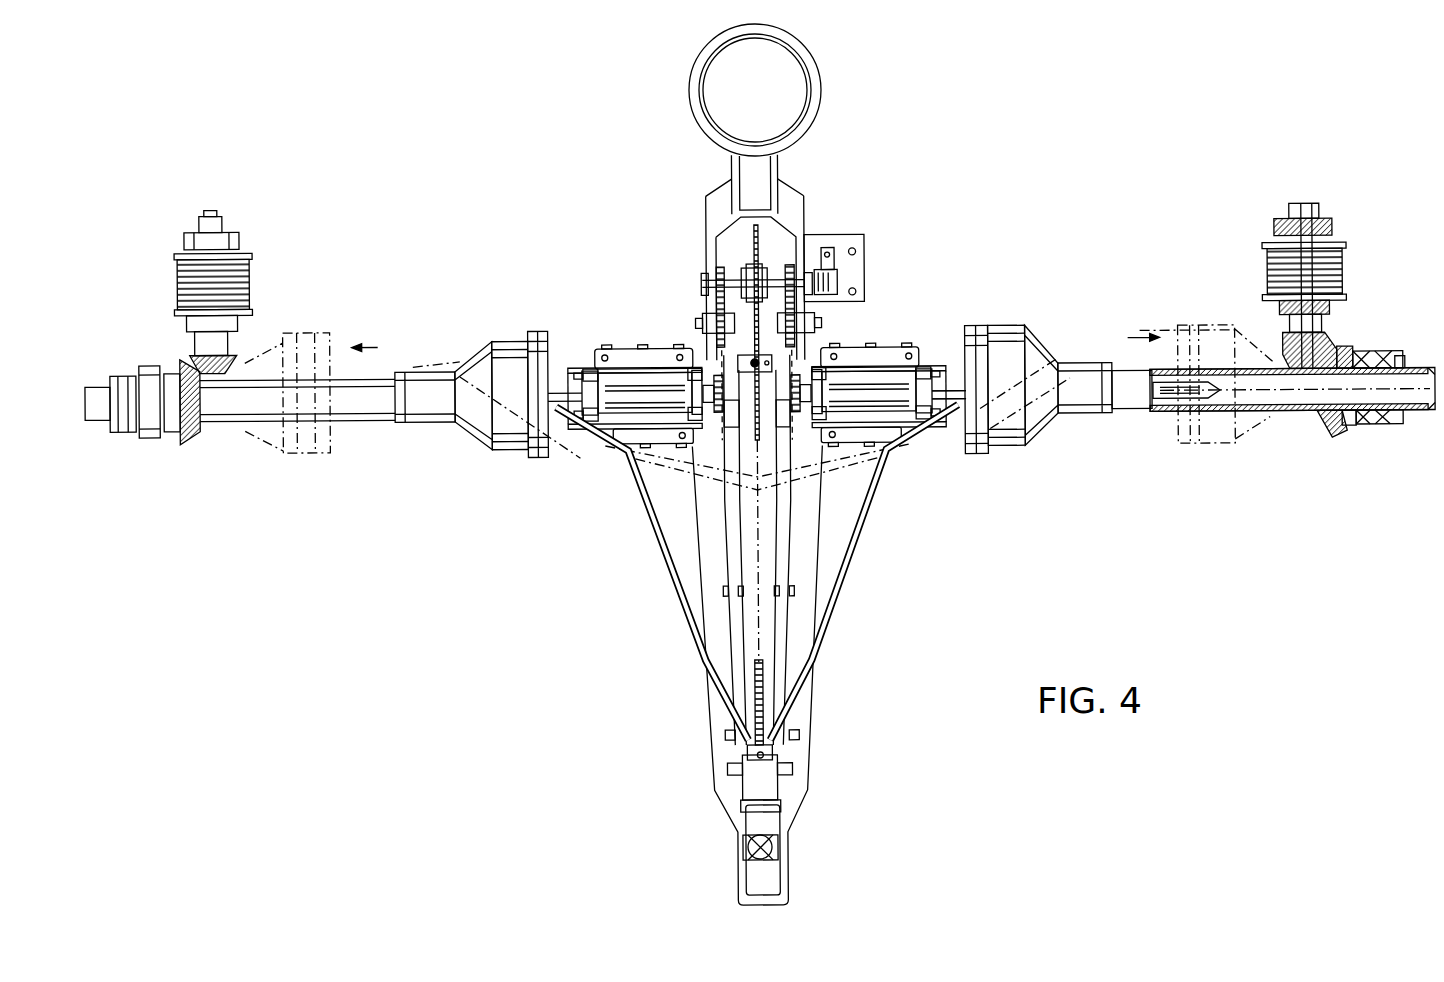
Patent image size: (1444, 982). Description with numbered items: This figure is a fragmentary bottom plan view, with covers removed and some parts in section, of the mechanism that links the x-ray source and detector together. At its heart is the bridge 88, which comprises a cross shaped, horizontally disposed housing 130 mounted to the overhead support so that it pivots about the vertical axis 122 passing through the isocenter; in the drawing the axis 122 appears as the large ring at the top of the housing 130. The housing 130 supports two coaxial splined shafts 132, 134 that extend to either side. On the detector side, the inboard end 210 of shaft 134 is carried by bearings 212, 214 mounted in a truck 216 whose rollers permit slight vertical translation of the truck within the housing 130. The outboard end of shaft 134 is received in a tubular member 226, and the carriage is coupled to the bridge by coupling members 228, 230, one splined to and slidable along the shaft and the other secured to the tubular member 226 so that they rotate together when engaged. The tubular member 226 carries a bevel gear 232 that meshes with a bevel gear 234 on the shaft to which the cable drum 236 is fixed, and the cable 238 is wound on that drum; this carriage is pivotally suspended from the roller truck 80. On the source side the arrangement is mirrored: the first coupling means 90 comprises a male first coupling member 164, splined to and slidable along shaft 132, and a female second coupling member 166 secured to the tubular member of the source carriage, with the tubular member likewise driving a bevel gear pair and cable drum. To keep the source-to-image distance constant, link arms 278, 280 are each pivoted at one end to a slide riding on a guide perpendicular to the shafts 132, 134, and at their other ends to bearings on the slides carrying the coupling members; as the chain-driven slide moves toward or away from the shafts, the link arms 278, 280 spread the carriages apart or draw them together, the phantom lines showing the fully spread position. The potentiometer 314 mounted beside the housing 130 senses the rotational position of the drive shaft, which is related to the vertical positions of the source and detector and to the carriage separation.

The vertical axis 122 is at (753, 90).
The bridge member 88 is at (720, 196).
The housing 130 is at (795, 200).
The potentiometer 314 is at (852, 248).
The coupling member 228 is at (543, 335).
The inboard end of shaft 210 is at (572, 372).
The bearing 212 is at (697, 377).
The splined shaft 134 is at (582, 362).
The tubular member 226 is at (421, 374).
The coupling member 230 is at (488, 342).
The roller truck 80 is at (507, 452).
The bearing 214 is at (577, 422).
The truck 216 is at (657, 398).
The first coupling member 164 is at (982, 327).
The second coupling member 166 is at (980, 458).
The splined shaft 132 is at (947, 372).
The first coupling means 90 is at (1012, 342).
The cable drum 236 is at (250, 256).
The cable 238 is at (250, 298).
The bevel gear 234 is at (228, 356).
The bevel gear 232 is at (176, 432).
The link arm 278 is at (678, 608).
The link arm 280 is at (830, 620).